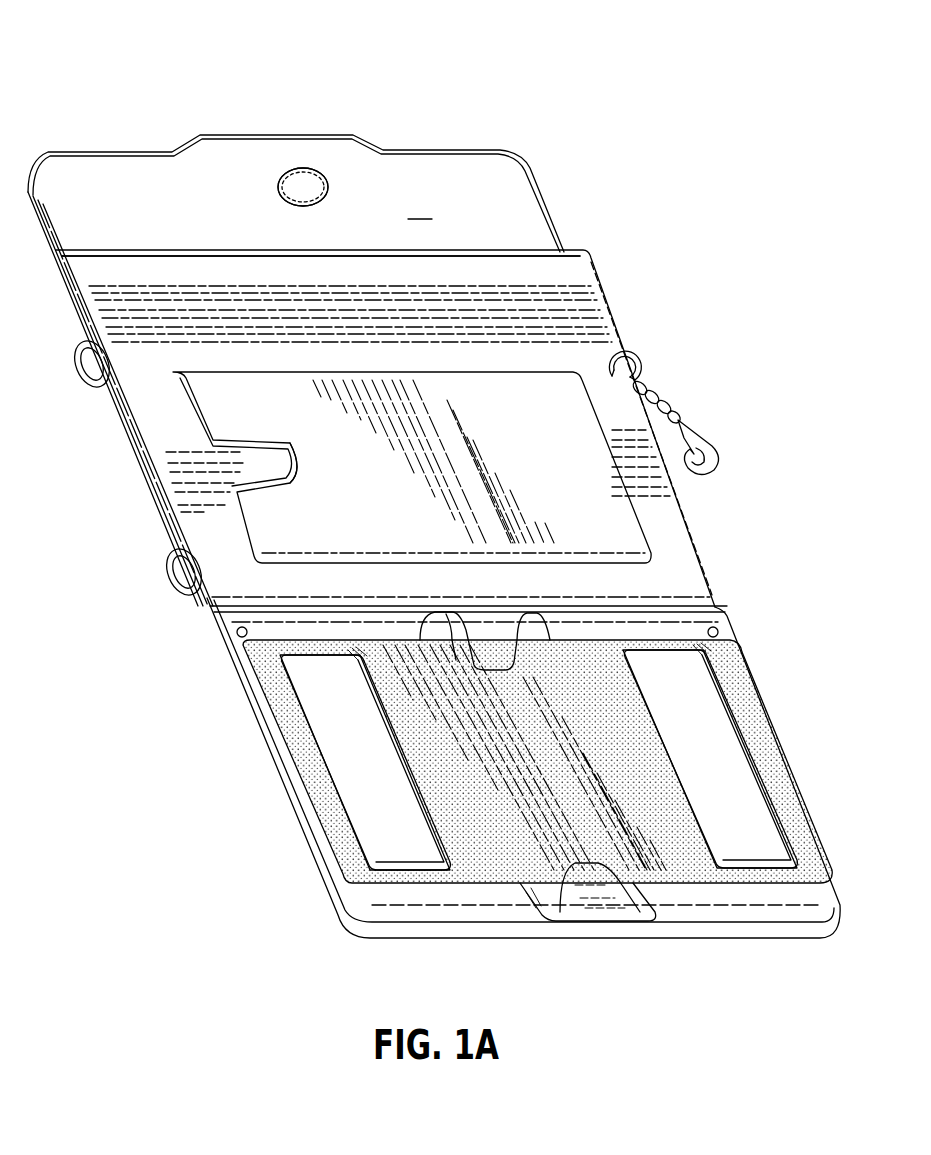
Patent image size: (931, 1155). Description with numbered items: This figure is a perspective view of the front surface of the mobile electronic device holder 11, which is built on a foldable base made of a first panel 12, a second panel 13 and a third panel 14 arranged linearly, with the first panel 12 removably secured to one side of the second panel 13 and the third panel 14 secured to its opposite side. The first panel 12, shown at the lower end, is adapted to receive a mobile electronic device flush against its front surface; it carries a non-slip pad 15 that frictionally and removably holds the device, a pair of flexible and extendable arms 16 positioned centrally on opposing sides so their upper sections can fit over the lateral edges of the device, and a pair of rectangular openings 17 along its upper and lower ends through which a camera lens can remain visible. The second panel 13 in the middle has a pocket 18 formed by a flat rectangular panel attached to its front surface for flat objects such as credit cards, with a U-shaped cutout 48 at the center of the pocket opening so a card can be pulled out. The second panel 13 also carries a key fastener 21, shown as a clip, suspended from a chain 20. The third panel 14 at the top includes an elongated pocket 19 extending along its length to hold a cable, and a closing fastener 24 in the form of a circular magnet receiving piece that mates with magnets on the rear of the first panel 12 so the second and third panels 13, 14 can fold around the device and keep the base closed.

The mobile electronic device holder 11 is at (83, 78).
The first panel 12 is at (350, 897).
The second panel 13 is at (683, 557).
The third panel 14 is at (573, 223).
The pad 15 is at (312, 762).
The arm 16 is at (600, 912).
The opening 17 is at (318, 722).
The pocket 18 is at (288, 412).
The elongated pocket 19 is at (160, 266).
The chain 20 is at (688, 400).
The key fastener 21 is at (718, 456).
The closing fastener 24 is at (298, 166).
The U-shaped cutout 48 is at (252, 470).